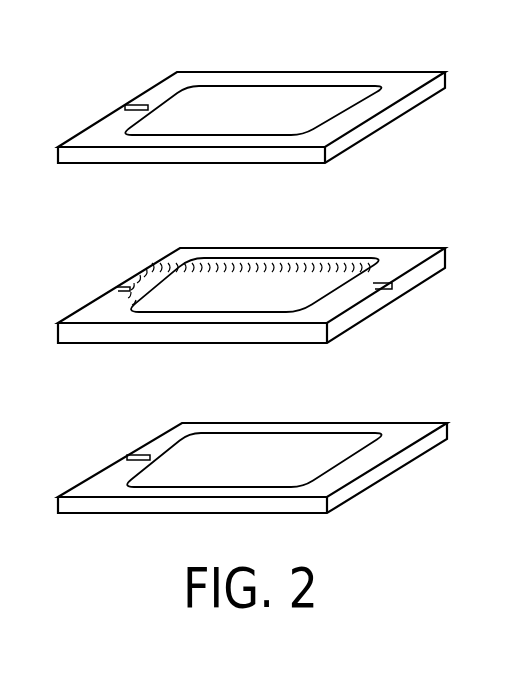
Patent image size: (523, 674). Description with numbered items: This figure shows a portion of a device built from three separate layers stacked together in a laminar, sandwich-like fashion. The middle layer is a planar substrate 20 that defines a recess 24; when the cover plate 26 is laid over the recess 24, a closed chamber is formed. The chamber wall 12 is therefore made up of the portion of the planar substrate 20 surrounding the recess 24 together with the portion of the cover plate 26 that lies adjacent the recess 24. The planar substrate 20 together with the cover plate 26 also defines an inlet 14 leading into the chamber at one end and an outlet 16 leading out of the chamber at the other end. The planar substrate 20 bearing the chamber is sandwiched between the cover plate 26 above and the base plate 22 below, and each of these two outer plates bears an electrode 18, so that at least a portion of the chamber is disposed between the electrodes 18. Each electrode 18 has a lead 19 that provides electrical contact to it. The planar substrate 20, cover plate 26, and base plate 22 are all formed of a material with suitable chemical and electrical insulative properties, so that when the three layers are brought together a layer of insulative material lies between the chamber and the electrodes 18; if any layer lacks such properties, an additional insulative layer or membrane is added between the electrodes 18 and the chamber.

The chamber wall 12 is at (246, 261).
The inlet 14 is at (125, 290).
The outlet 16 is at (392, 283).
The electrode 18 is at (276, 95).
The lead 19 is at (138, 106).
The planar substrate 20 is at (122, 333).
The base plate 22 is at (342, 495).
The recess 24 is at (290, 290).
The cover plate 26 is at (230, 72).